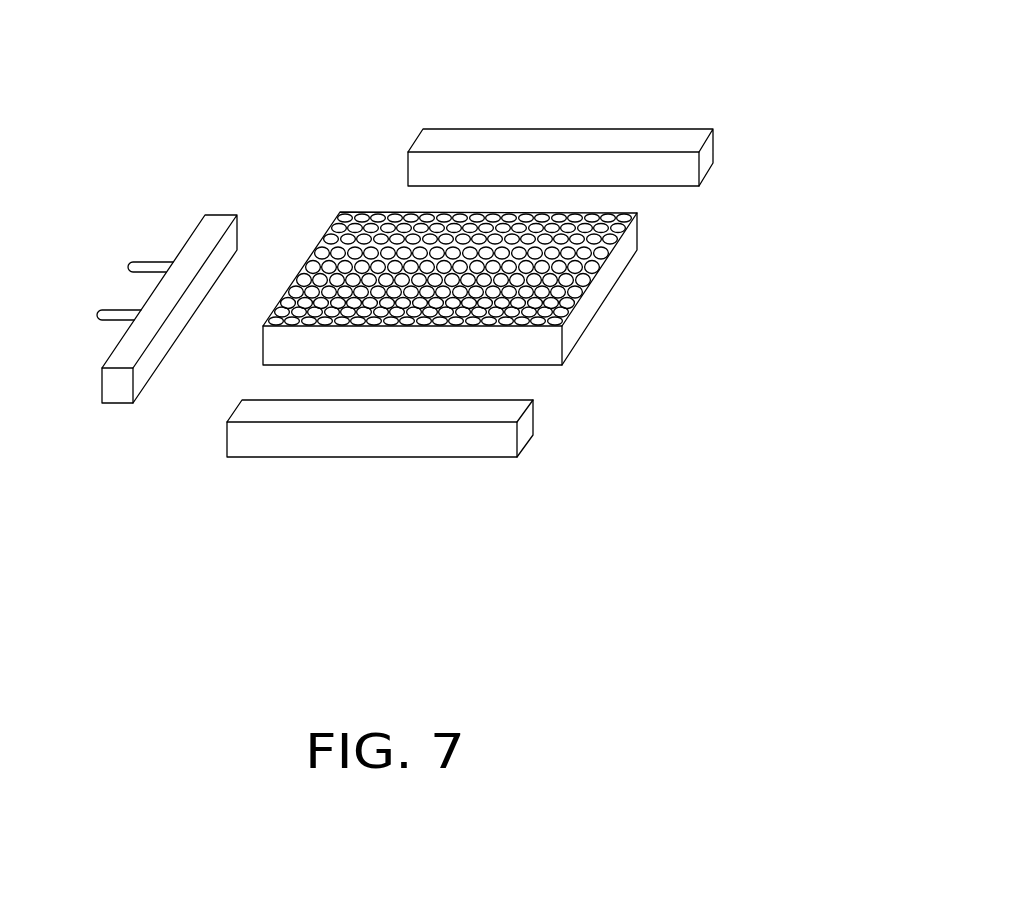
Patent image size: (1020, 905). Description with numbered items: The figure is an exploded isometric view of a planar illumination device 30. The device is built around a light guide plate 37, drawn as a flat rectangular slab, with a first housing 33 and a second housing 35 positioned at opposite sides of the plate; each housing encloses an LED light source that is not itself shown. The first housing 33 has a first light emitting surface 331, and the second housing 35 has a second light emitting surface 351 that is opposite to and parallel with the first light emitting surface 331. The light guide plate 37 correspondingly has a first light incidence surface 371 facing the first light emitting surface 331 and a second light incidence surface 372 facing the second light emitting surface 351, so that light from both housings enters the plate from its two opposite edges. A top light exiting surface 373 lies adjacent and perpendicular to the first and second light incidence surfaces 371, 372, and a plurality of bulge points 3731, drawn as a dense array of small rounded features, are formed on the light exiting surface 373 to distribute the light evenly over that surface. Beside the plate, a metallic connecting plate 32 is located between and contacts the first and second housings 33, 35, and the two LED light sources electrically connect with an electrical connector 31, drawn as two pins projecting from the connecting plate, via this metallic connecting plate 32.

The planar illumination device 30 is at (401, 46).
The electrical connector 31 is at (117, 313).
The metallic connecting plate 32 is at (226, 208).
The first housing 33 is at (645, 104).
The first light emitting surface 331 is at (678, 167).
The second housing 35 is at (479, 472).
The second light emitting surface 351 is at (544, 413).
The light guide plate 37 is at (646, 284).
The first light incidence surface 371 is at (647, 228).
The second light incidence surface 372 is at (542, 340).
The light exiting surface 373 is at (576, 316).
The bulge points 3731 is at (368, 210).